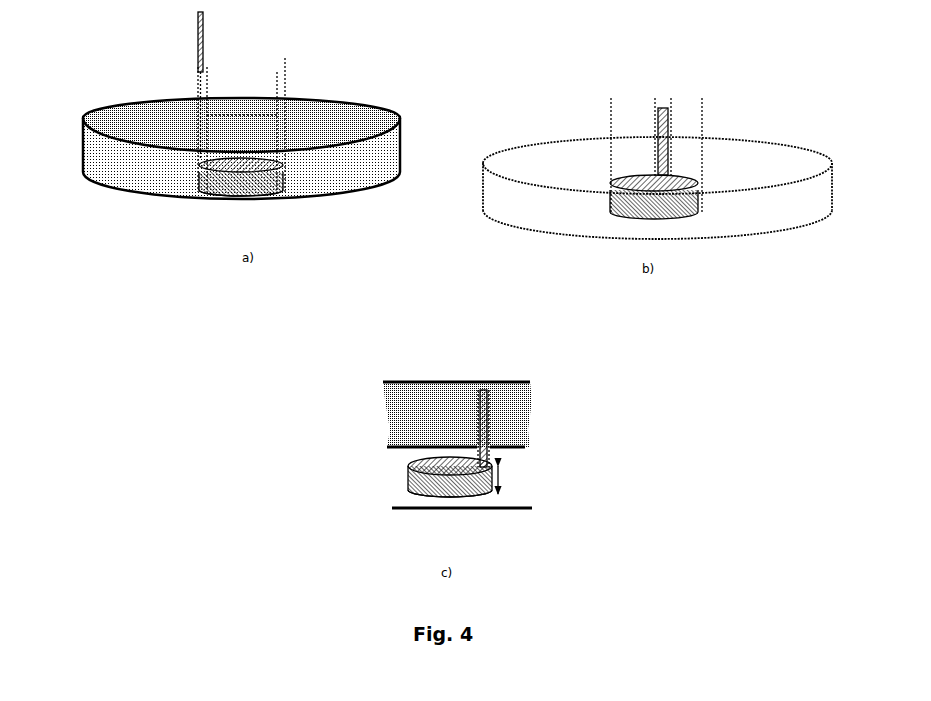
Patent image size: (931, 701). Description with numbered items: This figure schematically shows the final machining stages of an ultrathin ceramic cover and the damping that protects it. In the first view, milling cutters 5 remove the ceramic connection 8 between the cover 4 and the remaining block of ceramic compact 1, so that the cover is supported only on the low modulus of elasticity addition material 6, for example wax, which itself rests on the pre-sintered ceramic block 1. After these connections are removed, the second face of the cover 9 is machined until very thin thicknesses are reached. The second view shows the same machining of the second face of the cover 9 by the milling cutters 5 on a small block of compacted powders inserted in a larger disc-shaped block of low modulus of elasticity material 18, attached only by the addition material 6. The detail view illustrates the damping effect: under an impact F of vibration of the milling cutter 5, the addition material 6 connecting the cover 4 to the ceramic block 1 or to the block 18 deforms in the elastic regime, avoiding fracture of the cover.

The ceramic block 1 is at (130, 127).
The cover 4 is at (240, 192).
The milling cutter 5 is at (215, 33).
The addition material 6 is at (207, 192).
The ceramic connection 8 is at (283, 130).
The second face of the cover 9 is at (225, 137).
The block of low modulus of elasticity material 18 is at (533, 158).
The impact load F is at (486, 423).